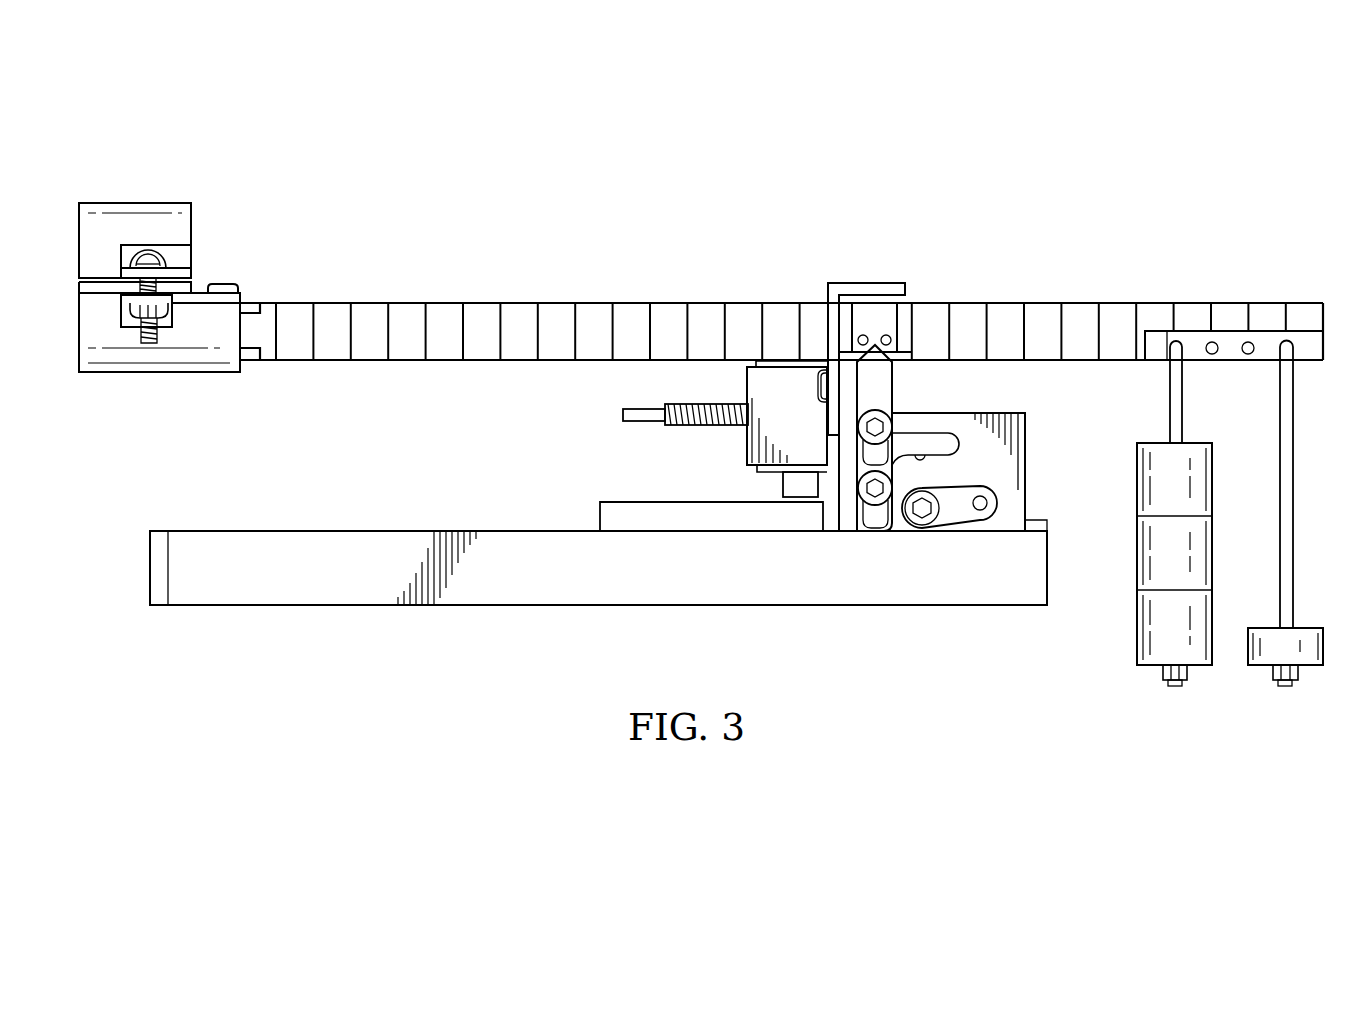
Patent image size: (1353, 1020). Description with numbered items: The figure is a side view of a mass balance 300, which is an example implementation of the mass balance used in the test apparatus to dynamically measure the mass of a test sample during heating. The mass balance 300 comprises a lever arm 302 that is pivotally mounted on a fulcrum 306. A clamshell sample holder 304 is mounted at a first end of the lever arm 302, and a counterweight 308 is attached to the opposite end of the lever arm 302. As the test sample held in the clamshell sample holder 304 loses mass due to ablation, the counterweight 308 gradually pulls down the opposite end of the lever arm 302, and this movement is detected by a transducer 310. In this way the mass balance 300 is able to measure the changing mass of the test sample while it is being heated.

The mass balance 300 is at (1014, 181).
The lever arm 302 is at (483, 303).
The clamshell sample holder 304 is at (134, 203).
The fulcrum 306 is at (895, 398).
The counterweight 308 is at (1175, 686).
The transducer 310 is at (800, 488).